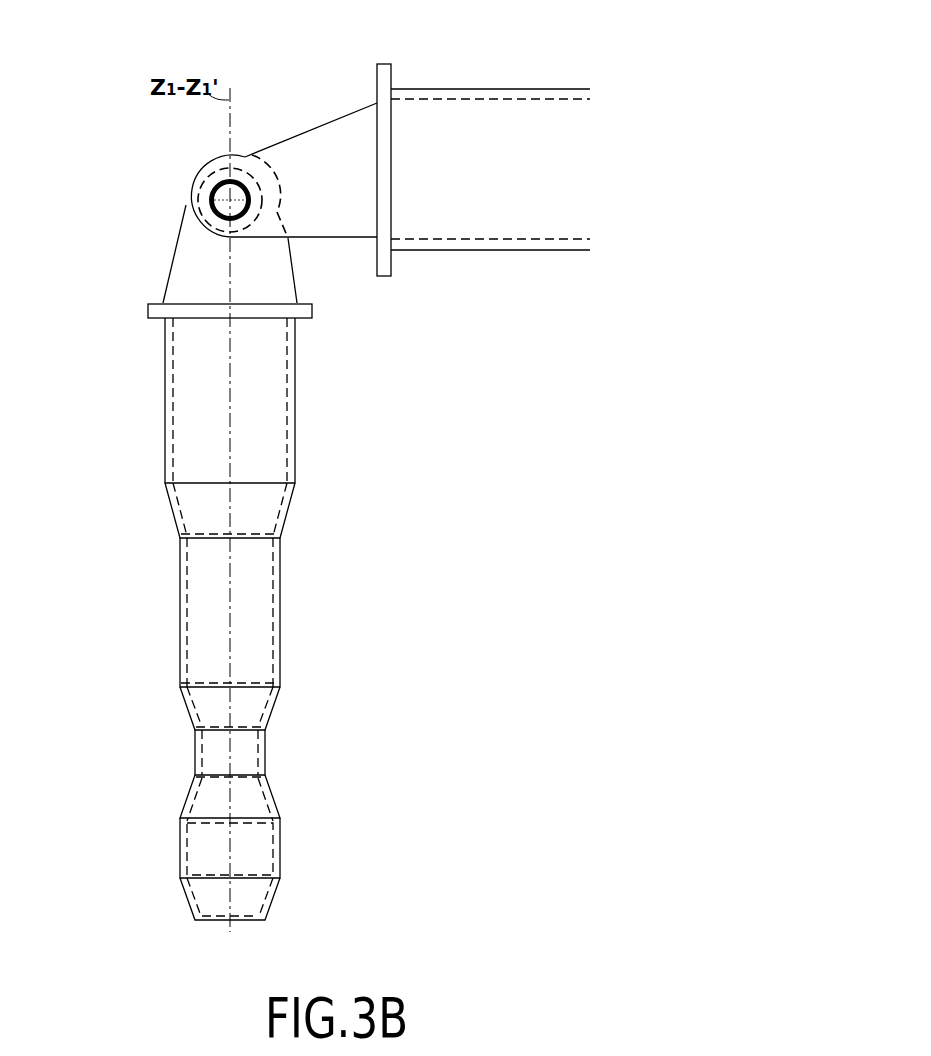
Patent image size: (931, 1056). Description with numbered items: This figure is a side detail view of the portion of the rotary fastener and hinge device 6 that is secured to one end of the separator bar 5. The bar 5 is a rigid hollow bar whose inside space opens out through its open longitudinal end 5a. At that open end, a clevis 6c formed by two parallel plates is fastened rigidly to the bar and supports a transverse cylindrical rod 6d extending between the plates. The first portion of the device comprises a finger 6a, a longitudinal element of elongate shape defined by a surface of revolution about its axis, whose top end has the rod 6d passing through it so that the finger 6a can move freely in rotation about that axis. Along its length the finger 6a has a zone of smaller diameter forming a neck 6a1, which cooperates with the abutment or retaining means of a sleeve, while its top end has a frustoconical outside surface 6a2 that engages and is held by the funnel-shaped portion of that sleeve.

The separator bar 5 is at (493, 86).
The open longitudinal end 5a is at (398, 117).
The fastener and hinge device 6 is at (93, 391).
The finger 6a is at (272, 400).
The neck 6a1 is at (257, 745).
The frustoconical outside surface 6a2 is at (172, 510).
The clevis 6c is at (313, 136).
The transverse cylindrical rod 6d is at (230, 200).